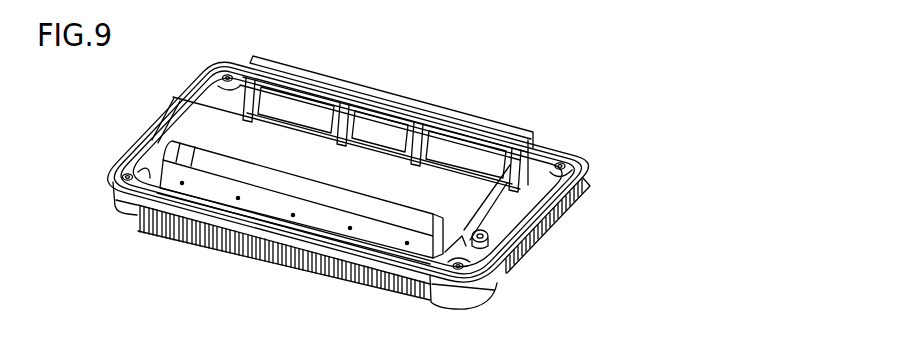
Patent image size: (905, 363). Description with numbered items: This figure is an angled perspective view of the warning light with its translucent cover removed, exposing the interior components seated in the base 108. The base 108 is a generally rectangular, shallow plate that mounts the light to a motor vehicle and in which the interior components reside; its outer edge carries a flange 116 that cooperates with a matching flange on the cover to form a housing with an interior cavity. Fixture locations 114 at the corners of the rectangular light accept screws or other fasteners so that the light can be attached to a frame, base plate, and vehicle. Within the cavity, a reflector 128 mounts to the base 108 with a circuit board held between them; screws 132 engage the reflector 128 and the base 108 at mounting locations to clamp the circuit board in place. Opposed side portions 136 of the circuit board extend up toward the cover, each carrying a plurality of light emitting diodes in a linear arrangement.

The base 108 is at (132, 212).
The fixture locations 114 is at (227, 75).
The flange 116 is at (445, 282).
The reflector 128 is at (185, 110).
The screws 132 is at (477, 233).
The side portions 136 is at (282, 73).